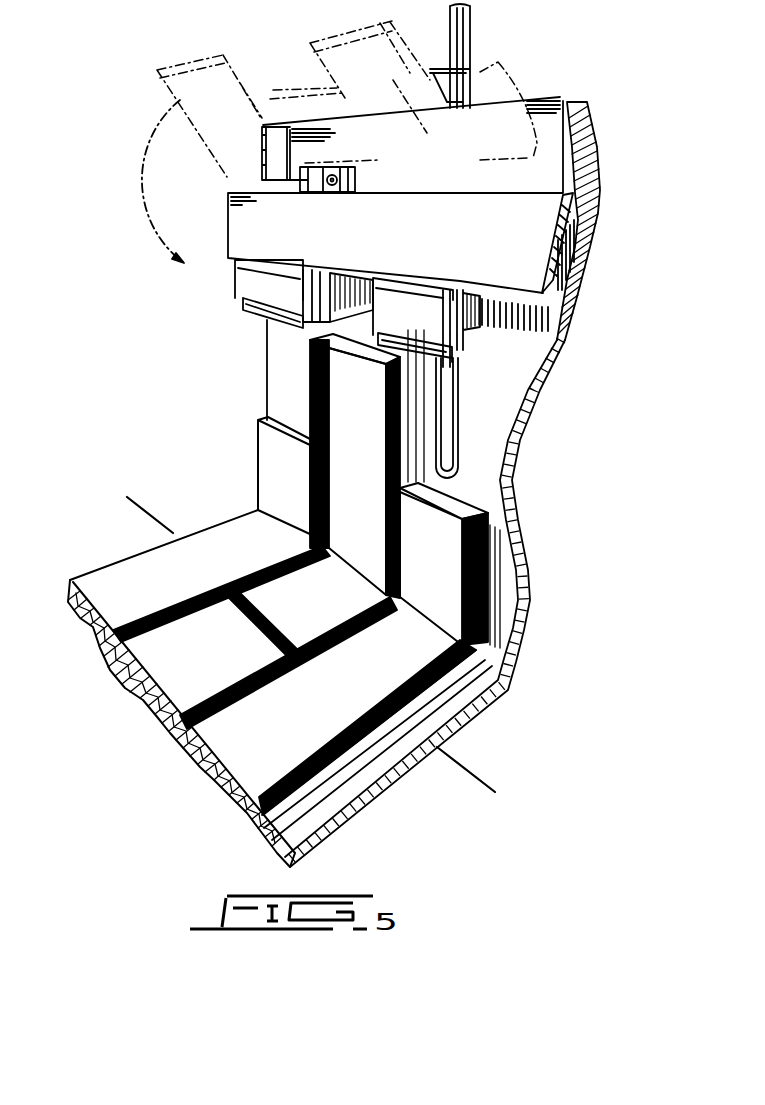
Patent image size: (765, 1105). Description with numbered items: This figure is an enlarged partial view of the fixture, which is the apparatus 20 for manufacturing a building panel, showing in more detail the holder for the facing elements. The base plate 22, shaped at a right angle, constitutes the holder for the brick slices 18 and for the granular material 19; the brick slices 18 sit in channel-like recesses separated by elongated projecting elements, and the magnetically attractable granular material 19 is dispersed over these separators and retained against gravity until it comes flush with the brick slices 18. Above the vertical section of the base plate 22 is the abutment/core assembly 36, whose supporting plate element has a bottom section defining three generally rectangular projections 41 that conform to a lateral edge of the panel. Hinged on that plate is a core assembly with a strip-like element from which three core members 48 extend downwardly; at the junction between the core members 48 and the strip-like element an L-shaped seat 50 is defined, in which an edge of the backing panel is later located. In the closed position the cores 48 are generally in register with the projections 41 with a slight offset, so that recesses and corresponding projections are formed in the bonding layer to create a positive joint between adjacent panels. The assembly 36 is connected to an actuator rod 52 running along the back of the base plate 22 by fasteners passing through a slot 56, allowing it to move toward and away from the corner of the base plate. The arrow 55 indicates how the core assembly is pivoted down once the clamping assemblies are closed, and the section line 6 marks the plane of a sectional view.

The apparatus 20 is at (533, 62).
The abutment/core assembly 36 is at (555, 98).
The base plate 22 is at (548, 350).
The actuator rod 52 is at (470, 33).
The L-shaped seat 50 is at (272, 110).
The arrow 55 is at (143, 170).
The core member 48 is at (262, 304).
The rectangular projection 41 is at (351, 283).
The slot 56 is at (447, 412).
The brick slice 18 is at (298, 496).
The granular material 19 is at (228, 592).
The section line 6 is at (148, 520).